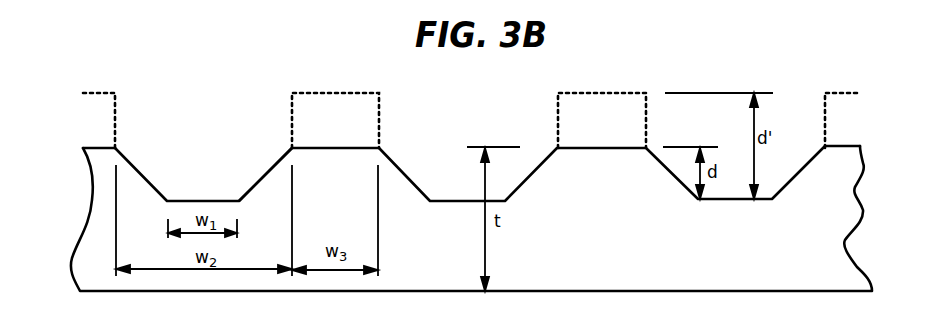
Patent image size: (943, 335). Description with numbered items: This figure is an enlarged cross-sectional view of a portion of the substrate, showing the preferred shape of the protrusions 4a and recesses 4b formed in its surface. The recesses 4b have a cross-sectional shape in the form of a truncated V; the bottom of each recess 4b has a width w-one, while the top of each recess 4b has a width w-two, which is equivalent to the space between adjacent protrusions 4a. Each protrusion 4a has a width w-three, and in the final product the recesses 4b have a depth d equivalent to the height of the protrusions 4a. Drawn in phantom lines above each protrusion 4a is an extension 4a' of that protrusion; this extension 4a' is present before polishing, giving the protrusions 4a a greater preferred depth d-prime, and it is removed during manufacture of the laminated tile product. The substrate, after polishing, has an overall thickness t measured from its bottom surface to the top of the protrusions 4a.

The protrusions 4a is at (301, 165).
The recesses 4b is at (222, 172).
The extension of protrusions 4a' is at (335, 120).